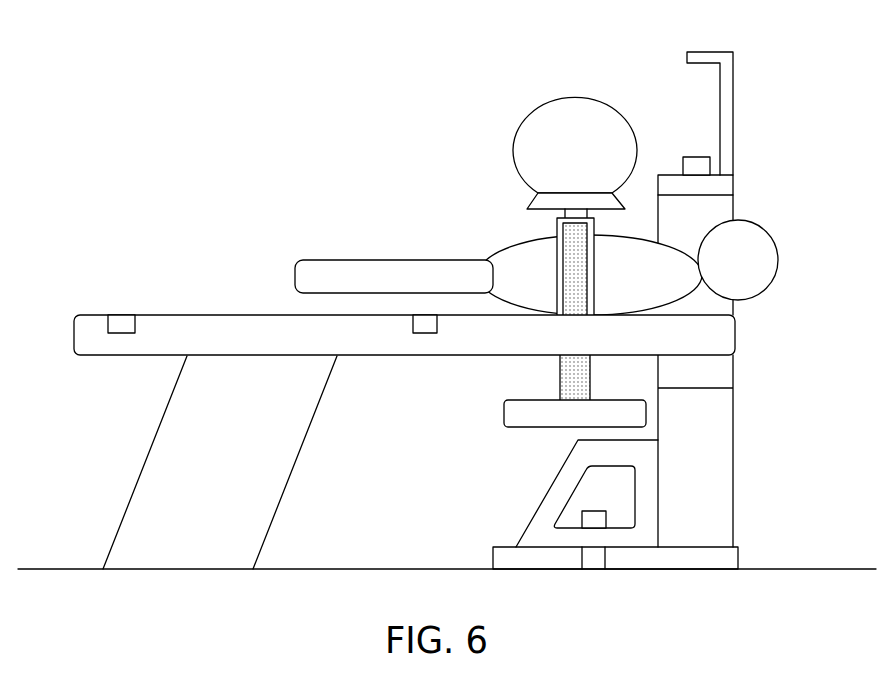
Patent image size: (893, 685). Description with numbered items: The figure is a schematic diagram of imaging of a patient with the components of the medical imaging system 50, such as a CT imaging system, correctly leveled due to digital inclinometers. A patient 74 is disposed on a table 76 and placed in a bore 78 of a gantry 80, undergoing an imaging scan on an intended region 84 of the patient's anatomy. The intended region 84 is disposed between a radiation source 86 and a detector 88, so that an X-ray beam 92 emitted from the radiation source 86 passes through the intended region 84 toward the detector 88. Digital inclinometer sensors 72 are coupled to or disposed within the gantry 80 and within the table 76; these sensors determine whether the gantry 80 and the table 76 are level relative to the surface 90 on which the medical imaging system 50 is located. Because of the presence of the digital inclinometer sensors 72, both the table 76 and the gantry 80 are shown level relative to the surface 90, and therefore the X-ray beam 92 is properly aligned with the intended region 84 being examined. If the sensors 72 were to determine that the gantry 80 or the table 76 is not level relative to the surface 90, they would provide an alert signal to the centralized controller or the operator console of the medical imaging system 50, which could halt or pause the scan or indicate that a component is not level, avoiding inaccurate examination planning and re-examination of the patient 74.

The medical imaging system 50 is at (512, 106).
The digital inclinometer sensor 72 is at (697, 157).
The patient 74 is at (494, 257).
The table 76 is at (347, 375).
The bore 78 is at (652, 228).
The gantry 80 is at (655, 182).
The intended region 84 is at (557, 230).
The radiation source 86 is at (577, 98).
The detector 88 is at (504, 412).
The surface 90 is at (55, 568).
The X-ray beam 92 is at (558, 382).